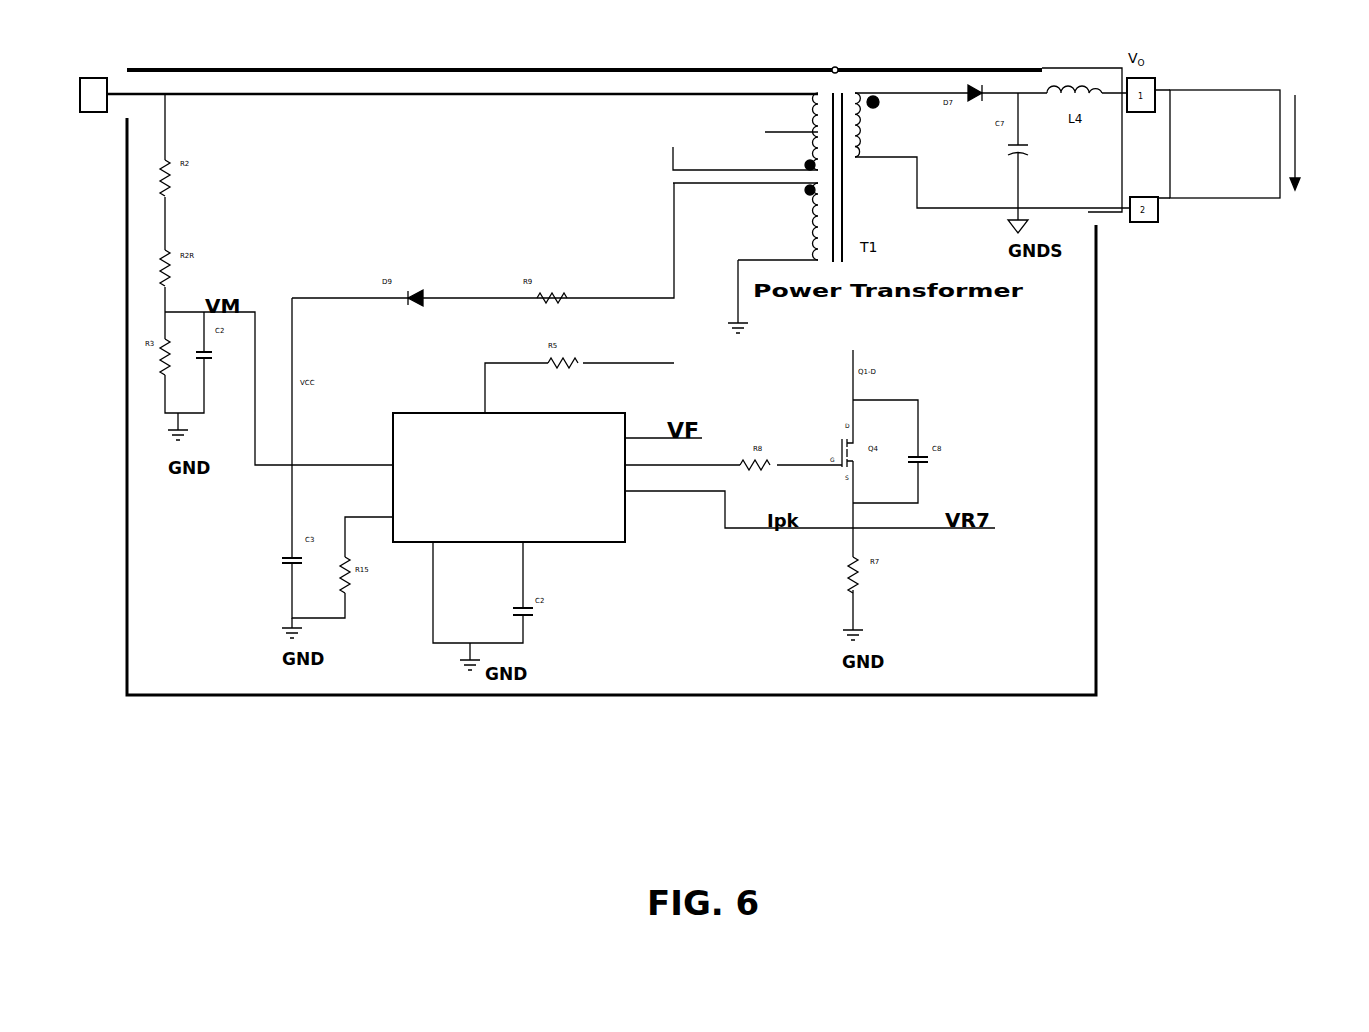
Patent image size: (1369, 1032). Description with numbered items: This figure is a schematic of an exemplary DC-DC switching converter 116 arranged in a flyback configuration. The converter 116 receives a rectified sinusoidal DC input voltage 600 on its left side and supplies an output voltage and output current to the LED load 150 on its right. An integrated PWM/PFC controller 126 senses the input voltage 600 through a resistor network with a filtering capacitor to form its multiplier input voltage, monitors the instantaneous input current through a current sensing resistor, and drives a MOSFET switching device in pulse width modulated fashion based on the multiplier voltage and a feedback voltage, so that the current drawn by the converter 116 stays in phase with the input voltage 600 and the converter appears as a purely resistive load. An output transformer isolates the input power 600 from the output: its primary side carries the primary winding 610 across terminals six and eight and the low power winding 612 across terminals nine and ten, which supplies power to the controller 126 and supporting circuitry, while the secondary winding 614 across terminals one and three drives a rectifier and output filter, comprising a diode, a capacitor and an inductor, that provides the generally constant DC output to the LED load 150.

The rectified sinusoidal DC input voltage 600 is at (90, 78).
The switching converter 116 is at (637, 67).
The primary winding 610 is at (817, 100).
The low power winding 612 is at (816, 207).
The secondary winding 614 is at (863, 128).
The LED load 150 is at (1263, 90).
The PFC and PWM controller 126 is at (596, 564).